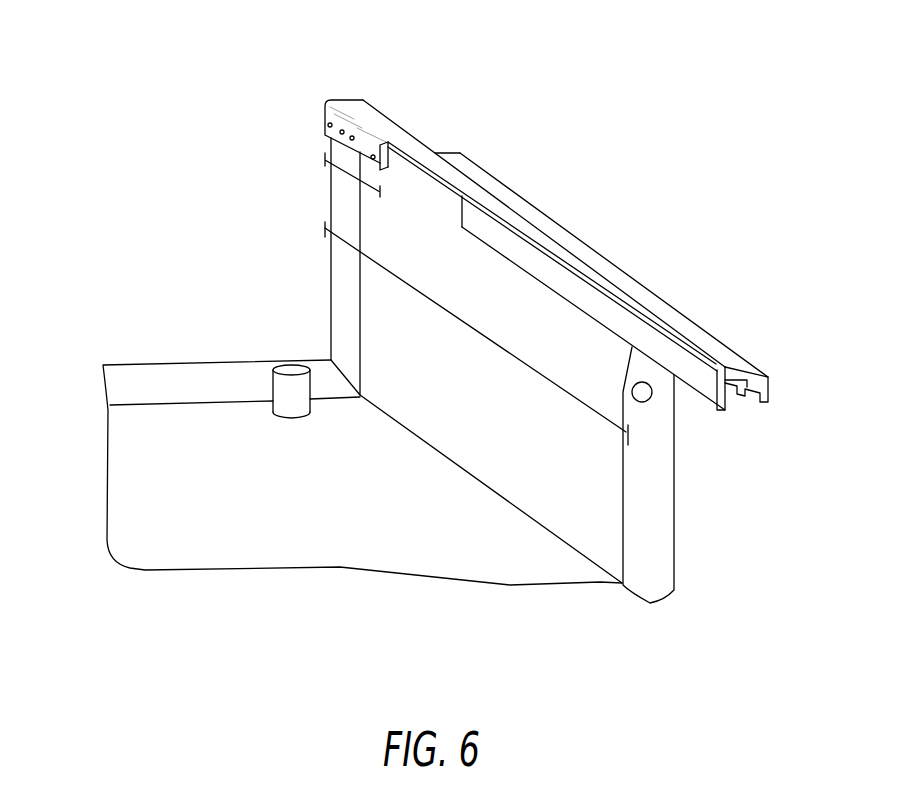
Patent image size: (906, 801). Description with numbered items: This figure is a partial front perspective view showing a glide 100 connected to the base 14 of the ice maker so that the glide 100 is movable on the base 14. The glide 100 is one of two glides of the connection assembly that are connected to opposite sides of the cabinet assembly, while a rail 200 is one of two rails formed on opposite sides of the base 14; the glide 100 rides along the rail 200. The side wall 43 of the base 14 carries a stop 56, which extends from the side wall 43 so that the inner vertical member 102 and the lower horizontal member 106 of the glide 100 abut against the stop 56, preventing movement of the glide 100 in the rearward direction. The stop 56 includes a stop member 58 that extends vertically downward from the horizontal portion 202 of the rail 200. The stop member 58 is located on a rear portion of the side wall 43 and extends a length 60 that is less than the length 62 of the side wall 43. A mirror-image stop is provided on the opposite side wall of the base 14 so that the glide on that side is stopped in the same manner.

The base 14 is at (196, 467).
The side wall 43 is at (642, 544).
The stop 56 is at (338, 107).
The stop member 58 is at (392, 160).
The length 60 is at (356, 183).
The length 62 is at (470, 328).
The glide 100 is at (710, 343).
The inner vertical member 102 is at (573, 283).
The lower horizontal member 106 is at (727, 394).
The rail 200 is at (433, 138).
The horizontal portion 202 is at (400, 144).